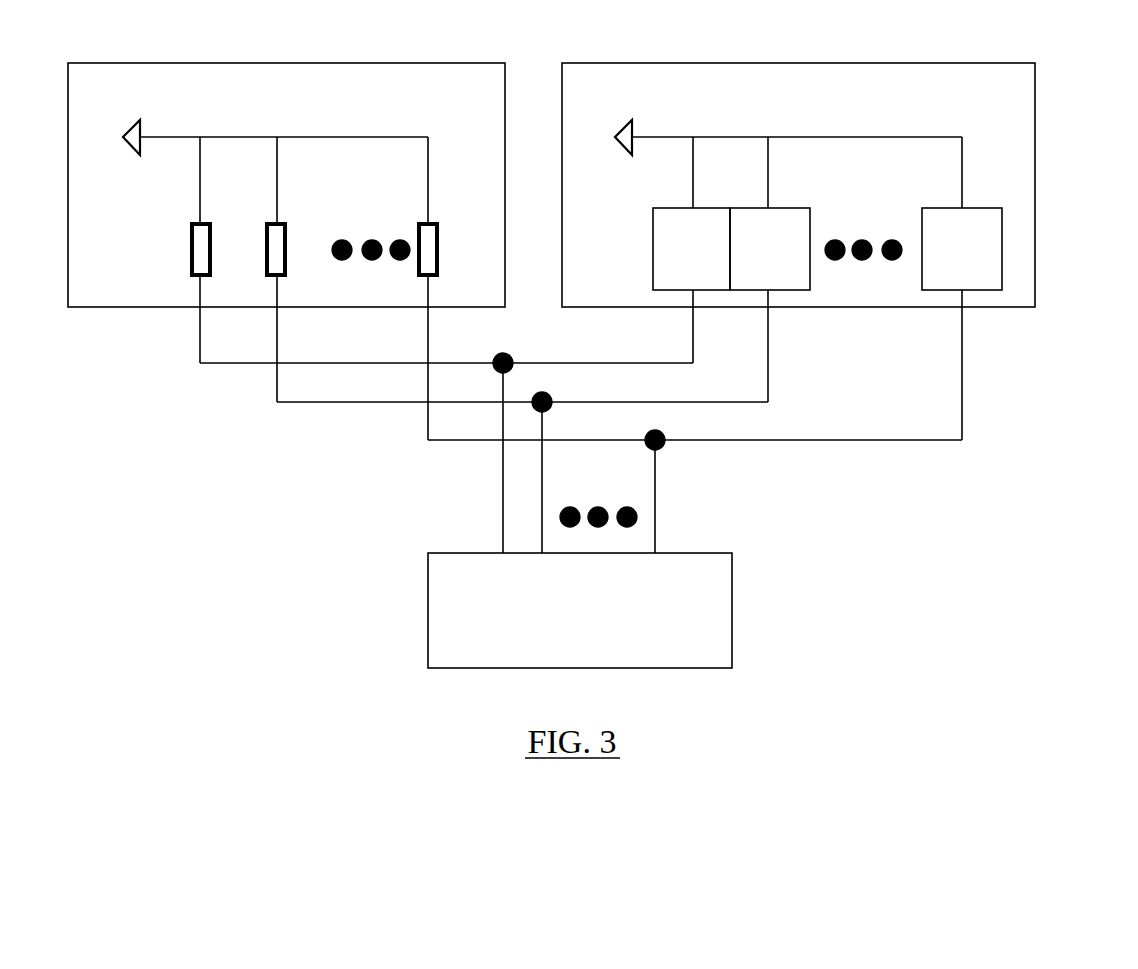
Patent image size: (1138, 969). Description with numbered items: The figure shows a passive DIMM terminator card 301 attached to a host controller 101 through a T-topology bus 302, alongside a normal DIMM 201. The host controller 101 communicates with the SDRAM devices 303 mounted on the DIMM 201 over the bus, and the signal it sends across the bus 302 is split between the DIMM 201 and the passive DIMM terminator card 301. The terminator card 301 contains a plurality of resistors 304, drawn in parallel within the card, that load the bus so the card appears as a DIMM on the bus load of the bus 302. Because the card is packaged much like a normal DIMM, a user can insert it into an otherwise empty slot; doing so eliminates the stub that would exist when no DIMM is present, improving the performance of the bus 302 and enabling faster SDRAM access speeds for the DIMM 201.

The passive DIMM terminator card 301 is at (286, 251).
The DIMM 201 is at (850, 251).
The resistors 304 is at (176, 238).
The SDRAM devices 303 is at (1010, 250).
The T-topology bus 302 is at (680, 486).
The host controller 101 is at (580, 610).